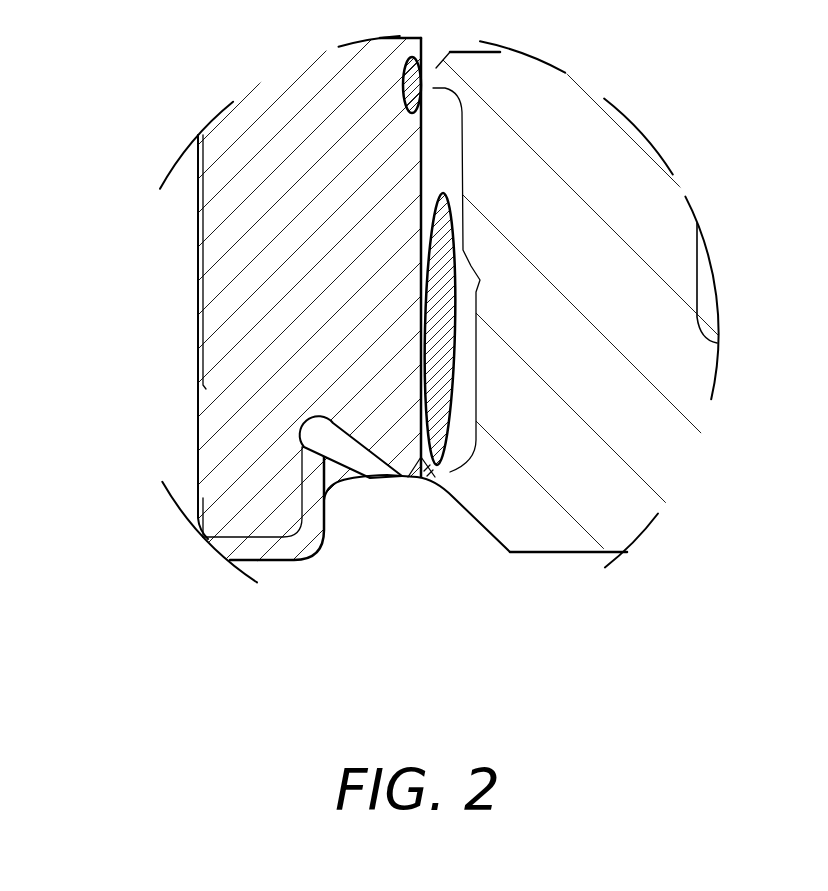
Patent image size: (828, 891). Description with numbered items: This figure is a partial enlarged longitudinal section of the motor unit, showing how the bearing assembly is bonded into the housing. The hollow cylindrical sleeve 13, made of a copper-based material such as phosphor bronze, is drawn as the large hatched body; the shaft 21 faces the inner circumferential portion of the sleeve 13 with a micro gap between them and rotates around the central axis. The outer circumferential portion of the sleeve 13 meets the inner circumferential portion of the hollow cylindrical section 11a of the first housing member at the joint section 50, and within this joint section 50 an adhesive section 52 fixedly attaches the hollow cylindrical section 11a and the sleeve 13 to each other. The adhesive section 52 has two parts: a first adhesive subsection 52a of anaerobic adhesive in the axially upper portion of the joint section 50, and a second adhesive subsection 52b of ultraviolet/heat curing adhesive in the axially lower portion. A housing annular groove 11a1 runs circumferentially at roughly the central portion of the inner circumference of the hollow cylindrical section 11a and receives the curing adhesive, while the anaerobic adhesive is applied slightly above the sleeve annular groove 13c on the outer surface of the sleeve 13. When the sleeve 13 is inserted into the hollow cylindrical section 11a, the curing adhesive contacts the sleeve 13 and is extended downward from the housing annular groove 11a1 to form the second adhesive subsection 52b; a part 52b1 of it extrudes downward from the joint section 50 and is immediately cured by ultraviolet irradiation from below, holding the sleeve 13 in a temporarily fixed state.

The sleeve 13 is at (325, 346).
The sleeve annular groove 13c is at (420, 128).
The shaft 21 is at (183, 323).
The joint section 50 is at (480, 280).
The adhesive section 52 is at (322, 80).
The first adhesive subsection 52a is at (404, 82).
The second adhesive subsection 52b is at (432, 247).
The part of the second adhesive section 52b1 is at (421, 479).
The hollow cylindrical section 11a is at (451, 310).
The housing annular groove 11a1 is at (427, 219).